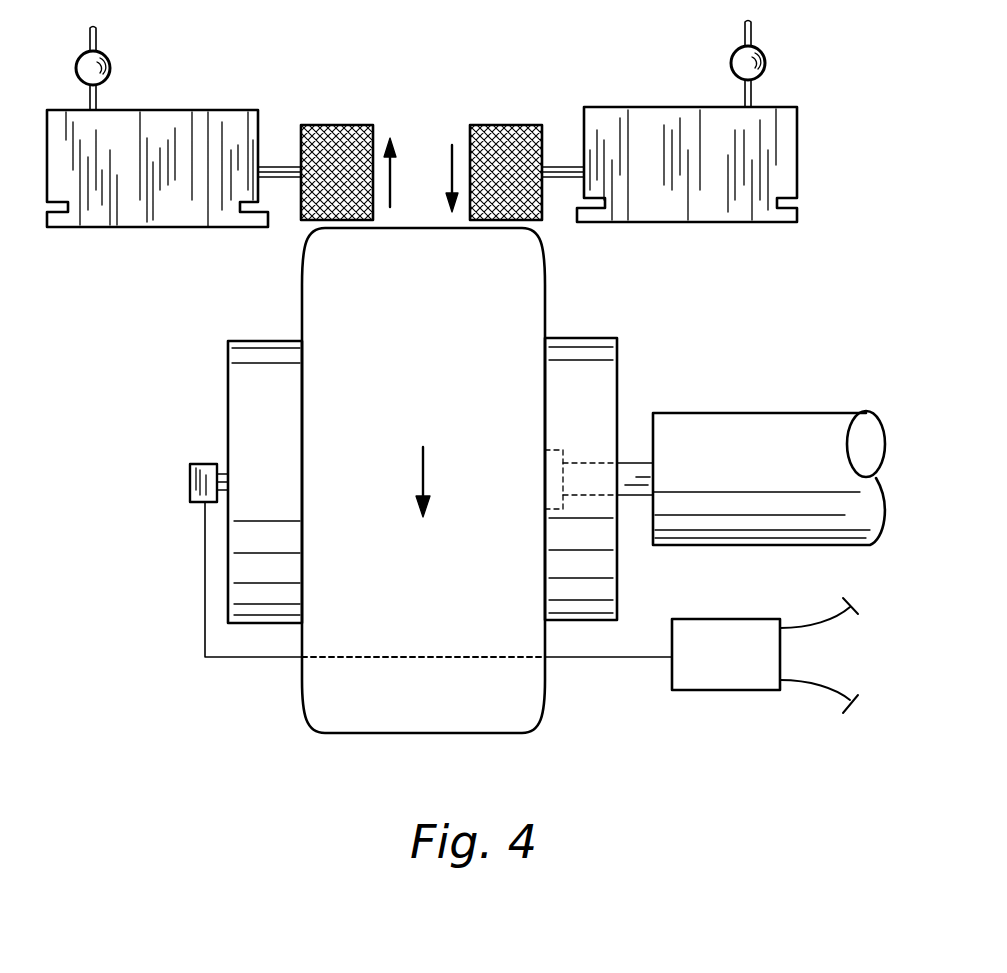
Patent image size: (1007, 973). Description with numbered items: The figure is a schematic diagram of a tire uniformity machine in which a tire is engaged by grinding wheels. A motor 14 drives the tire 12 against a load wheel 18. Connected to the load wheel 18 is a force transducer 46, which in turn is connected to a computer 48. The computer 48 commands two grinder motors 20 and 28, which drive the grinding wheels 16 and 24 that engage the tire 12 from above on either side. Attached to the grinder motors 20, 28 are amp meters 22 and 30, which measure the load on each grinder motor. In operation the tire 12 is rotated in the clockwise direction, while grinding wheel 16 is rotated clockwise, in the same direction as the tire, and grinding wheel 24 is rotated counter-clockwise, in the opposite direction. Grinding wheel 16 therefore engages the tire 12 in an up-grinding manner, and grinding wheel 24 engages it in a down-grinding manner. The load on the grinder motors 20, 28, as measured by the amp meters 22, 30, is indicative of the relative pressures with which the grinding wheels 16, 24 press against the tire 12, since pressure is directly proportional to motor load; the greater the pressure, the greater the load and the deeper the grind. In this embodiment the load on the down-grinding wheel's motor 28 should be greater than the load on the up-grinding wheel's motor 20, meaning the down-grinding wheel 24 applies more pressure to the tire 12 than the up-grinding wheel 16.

The tire 12 is at (302, 318).
The motor 14 is at (757, 413).
The grinding wheel 16 is at (512, 125).
The load wheel 18 is at (228, 420).
The grinder motor 20 is at (685, 107).
The amp meter 22 is at (730, 53).
The grinding wheel 24 is at (338, 125).
The grinder motor 28 is at (170, 110).
The amp meter 30 is at (112, 60).
The force transducer 46 is at (190, 478).
The computer 48 is at (710, 619).